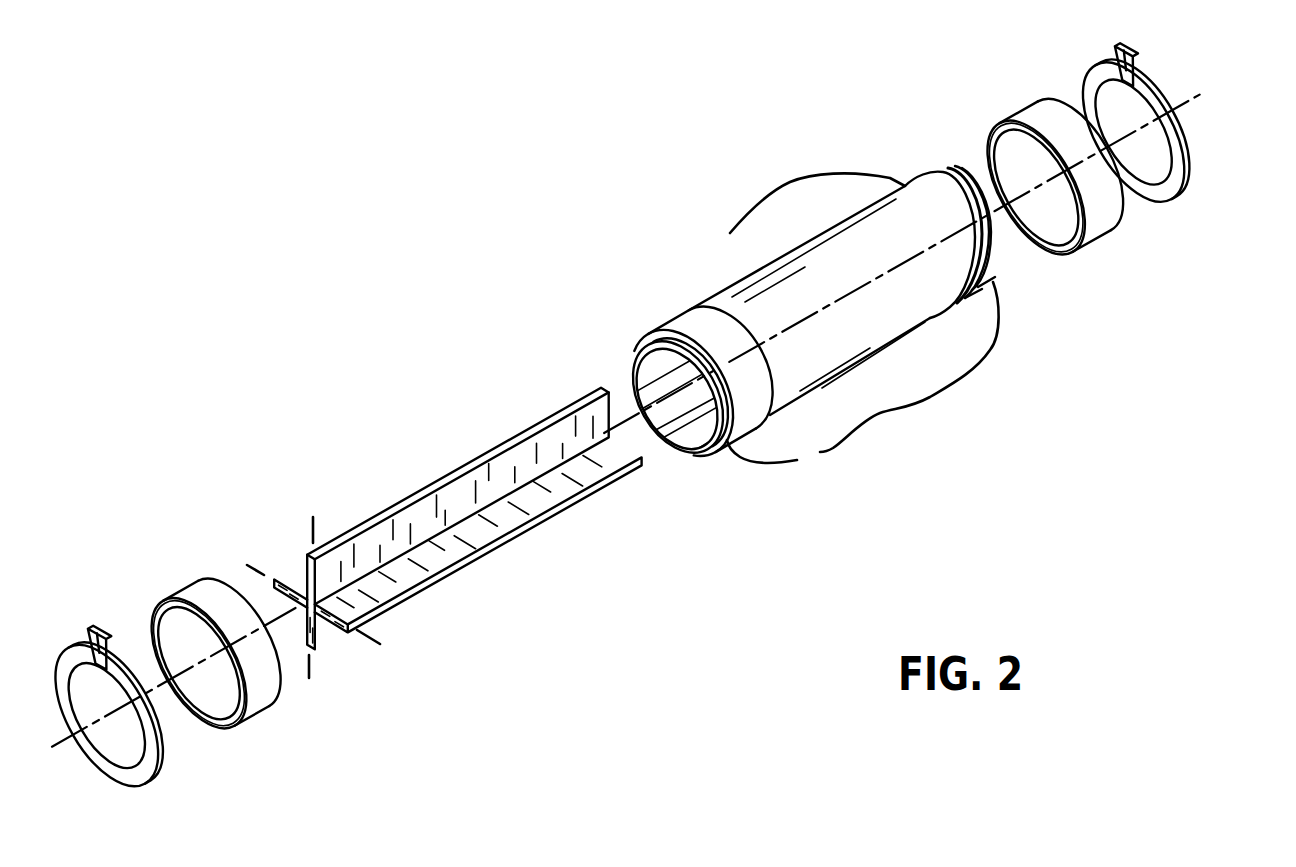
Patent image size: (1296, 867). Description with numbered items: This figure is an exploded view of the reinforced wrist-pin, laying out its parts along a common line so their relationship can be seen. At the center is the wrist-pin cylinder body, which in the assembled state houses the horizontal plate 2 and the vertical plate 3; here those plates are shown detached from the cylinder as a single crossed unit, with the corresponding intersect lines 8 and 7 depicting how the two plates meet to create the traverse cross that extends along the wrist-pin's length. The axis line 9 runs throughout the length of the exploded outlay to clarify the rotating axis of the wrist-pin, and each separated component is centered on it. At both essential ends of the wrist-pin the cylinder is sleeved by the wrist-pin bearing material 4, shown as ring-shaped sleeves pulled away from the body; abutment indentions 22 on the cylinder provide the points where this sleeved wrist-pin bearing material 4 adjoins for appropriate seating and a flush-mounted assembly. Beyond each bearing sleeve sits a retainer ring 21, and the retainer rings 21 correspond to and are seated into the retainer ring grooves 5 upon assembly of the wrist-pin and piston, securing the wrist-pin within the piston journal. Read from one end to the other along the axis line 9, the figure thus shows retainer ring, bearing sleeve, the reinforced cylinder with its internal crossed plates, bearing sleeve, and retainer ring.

The horizontal plate 2 is at (518, 526).
The vertical plate 3 is at (518, 436).
The wrist-pin bearing material 4 is at (245, 712).
The retainer ring grooves 5 is at (799, 459).
The intersect line 7 is at (310, 665).
The intersect line 8 is at (378, 637).
The axis line 9 is at (58, 748).
The retainer rings 21 is at (127, 773).
The abutment indentions 22 is at (678, 316).